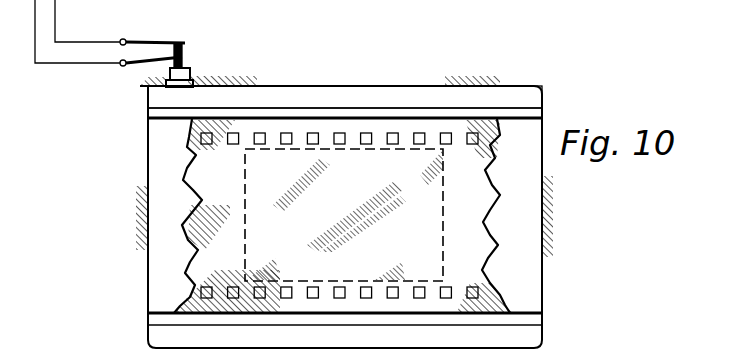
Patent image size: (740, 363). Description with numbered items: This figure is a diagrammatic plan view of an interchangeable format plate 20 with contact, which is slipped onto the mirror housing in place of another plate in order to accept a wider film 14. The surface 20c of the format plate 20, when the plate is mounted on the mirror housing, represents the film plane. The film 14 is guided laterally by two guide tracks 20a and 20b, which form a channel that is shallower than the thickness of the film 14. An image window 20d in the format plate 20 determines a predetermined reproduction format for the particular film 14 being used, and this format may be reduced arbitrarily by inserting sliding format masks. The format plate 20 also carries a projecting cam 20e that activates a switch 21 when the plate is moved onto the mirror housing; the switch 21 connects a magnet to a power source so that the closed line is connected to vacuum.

The format plate 20 is at (528, 280).
The guide track 20a is at (165, 318).
The guide track 20b is at (173, 118).
The surface 20c is at (165, 273).
The image window 20d is at (326, 150).
The projecting cam 20e is at (176, 88).
The film 14 is at (207, 162).
The switch 21 is at (187, 45).